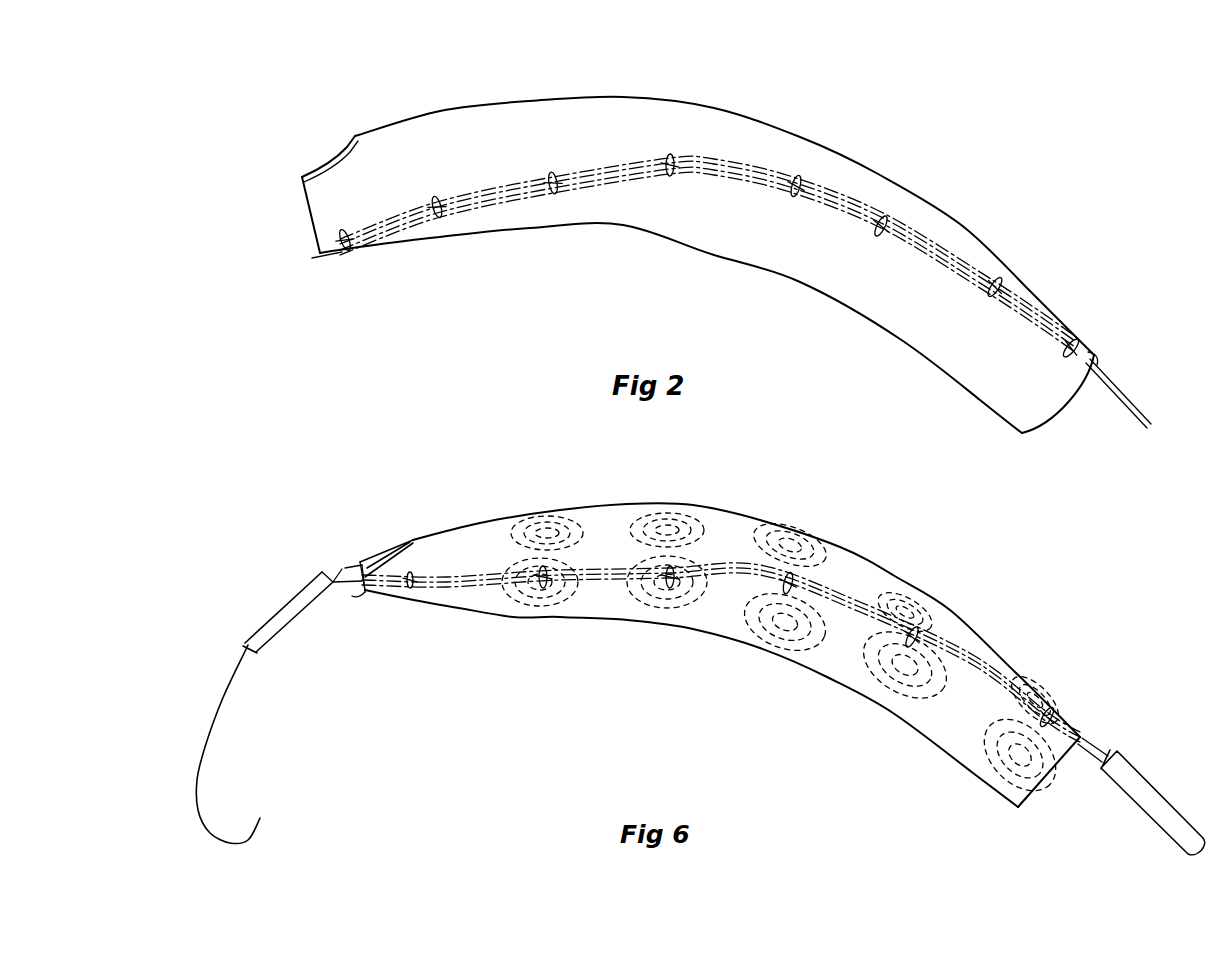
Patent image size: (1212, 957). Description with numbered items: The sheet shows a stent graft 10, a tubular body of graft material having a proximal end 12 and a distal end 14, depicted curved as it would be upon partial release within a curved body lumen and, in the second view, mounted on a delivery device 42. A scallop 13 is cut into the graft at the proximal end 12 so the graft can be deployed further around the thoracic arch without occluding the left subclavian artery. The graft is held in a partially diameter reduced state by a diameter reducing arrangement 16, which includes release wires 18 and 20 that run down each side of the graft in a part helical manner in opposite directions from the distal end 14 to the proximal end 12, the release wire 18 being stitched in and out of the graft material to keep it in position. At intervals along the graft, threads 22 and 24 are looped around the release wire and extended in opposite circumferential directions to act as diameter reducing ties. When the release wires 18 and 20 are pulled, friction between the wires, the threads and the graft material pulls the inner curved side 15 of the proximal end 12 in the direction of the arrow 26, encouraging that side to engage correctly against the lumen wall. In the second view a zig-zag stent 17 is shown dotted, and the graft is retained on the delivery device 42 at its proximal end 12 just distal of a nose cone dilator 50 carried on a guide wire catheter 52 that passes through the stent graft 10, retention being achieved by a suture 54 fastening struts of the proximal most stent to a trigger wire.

In FIG. 2, the stent graft 10 is at (420, 89).
In FIG. 6, the stent graft 10 is at (462, 504).
In FIG. 2, the proximal end 12 is at (312, 230).
In FIG. 6, the proximal end 12 is at (362, 587).
In FIG. 2, the scallop 13 is at (330, 155).
In FIG. 6, the scallop 13 is at (413, 543).
In FIG. 2, the distal end 14 is at (1061, 405).
In FIG. 6, the distal end 14 is at (1043, 780).
In FIG. 2, the inner curved side 15 is at (423, 240).
In FIG. 2, the diameter reducing arrangement 16 is at (629, 196).
In FIG. 6, the diameter reducing arrangement 16 is at (665, 590).
In FIG. 6, the stent 17 is at (780, 627).
In FIG. 2, the release wire 18 is at (737, 169).
In FIG. 6, the release wire 18 is at (760, 570).
In FIG. 2, the release wire 20 is at (1101, 361).
In FIG. 2, the thread 22 is at (542, 173).
In FIG. 6, the thread 22 is at (547, 573).
In FIG. 2, the thread 24 is at (548, 203).
In FIG. 6, the thread 24 is at (550, 597).
In FIG. 2, the arrow 26 is at (406, 287).
In FIG. 6, the arrow 26 is at (360, 592).
In FIG. 6, the delivery device 42 is at (1160, 800).
In FIG. 6, the nose cone dilator 50 is at (293, 603).
In FIG. 6, the guide wire catheter 52 is at (337, 563).
In FIG. 6, the suture 54 is at (360, 560).